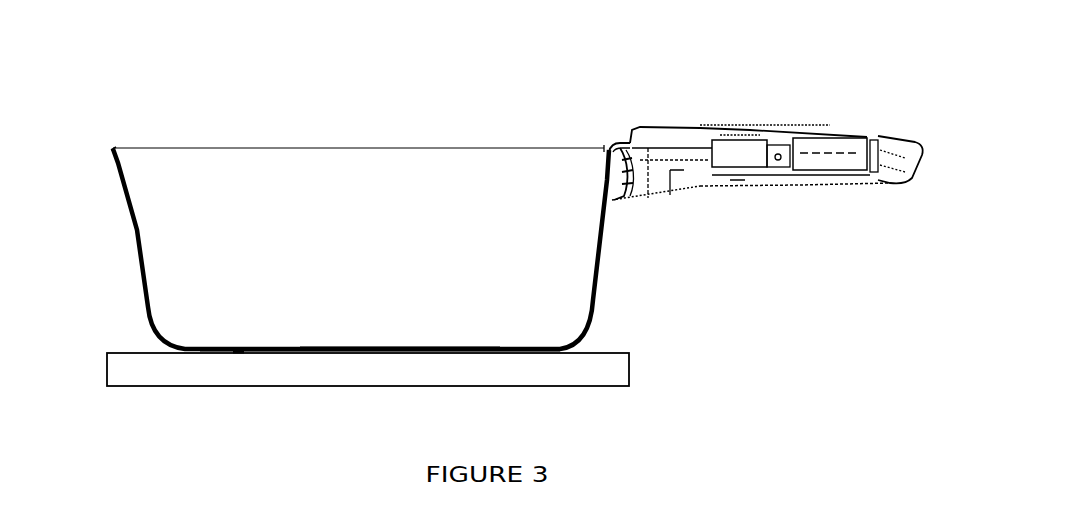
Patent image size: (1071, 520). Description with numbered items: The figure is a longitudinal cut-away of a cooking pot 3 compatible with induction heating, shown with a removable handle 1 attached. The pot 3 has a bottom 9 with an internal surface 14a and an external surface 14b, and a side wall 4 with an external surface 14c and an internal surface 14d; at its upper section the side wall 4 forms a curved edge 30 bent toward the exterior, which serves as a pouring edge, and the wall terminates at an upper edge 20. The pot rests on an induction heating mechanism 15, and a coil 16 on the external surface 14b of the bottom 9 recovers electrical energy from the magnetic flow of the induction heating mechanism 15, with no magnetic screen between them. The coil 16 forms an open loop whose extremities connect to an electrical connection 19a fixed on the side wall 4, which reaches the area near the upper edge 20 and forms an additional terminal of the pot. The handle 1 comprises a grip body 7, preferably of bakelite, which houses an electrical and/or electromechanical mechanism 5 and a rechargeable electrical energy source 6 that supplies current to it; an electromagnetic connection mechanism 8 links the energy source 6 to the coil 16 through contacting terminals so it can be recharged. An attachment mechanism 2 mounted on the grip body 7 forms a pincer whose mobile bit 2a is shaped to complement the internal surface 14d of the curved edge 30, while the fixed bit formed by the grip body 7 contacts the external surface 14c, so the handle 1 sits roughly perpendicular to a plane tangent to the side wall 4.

The removable handle 1 is at (760, 189).
The attachment mechanism 2 is at (602, 127).
The mobile bit 2a is at (612, 147).
The cooking pot 3 is at (136, 266).
The side wall 4 is at (150, 311).
The electrical and/or electromechanical mechanism 5 is at (705, 122).
The rechargeable electrical energy source 6 is at (840, 145).
The grip body 7 is at (866, 186).
The electromagnetic connection mechanism 8 is at (614, 198).
The bottom 9 is at (343, 348).
The internal surface 14a is at (437, 335).
The external surface 14b is at (190, 358).
The external surface 14c is at (127, 204).
The internal surface 14d is at (590, 203).
The induction heating mechanism 15 is at (630, 380).
The coil 16 is at (245, 350).
The electrical connection 19a is at (594, 307).
The upper edge 20 is at (126, 143).
The curved edge 30 is at (114, 146).